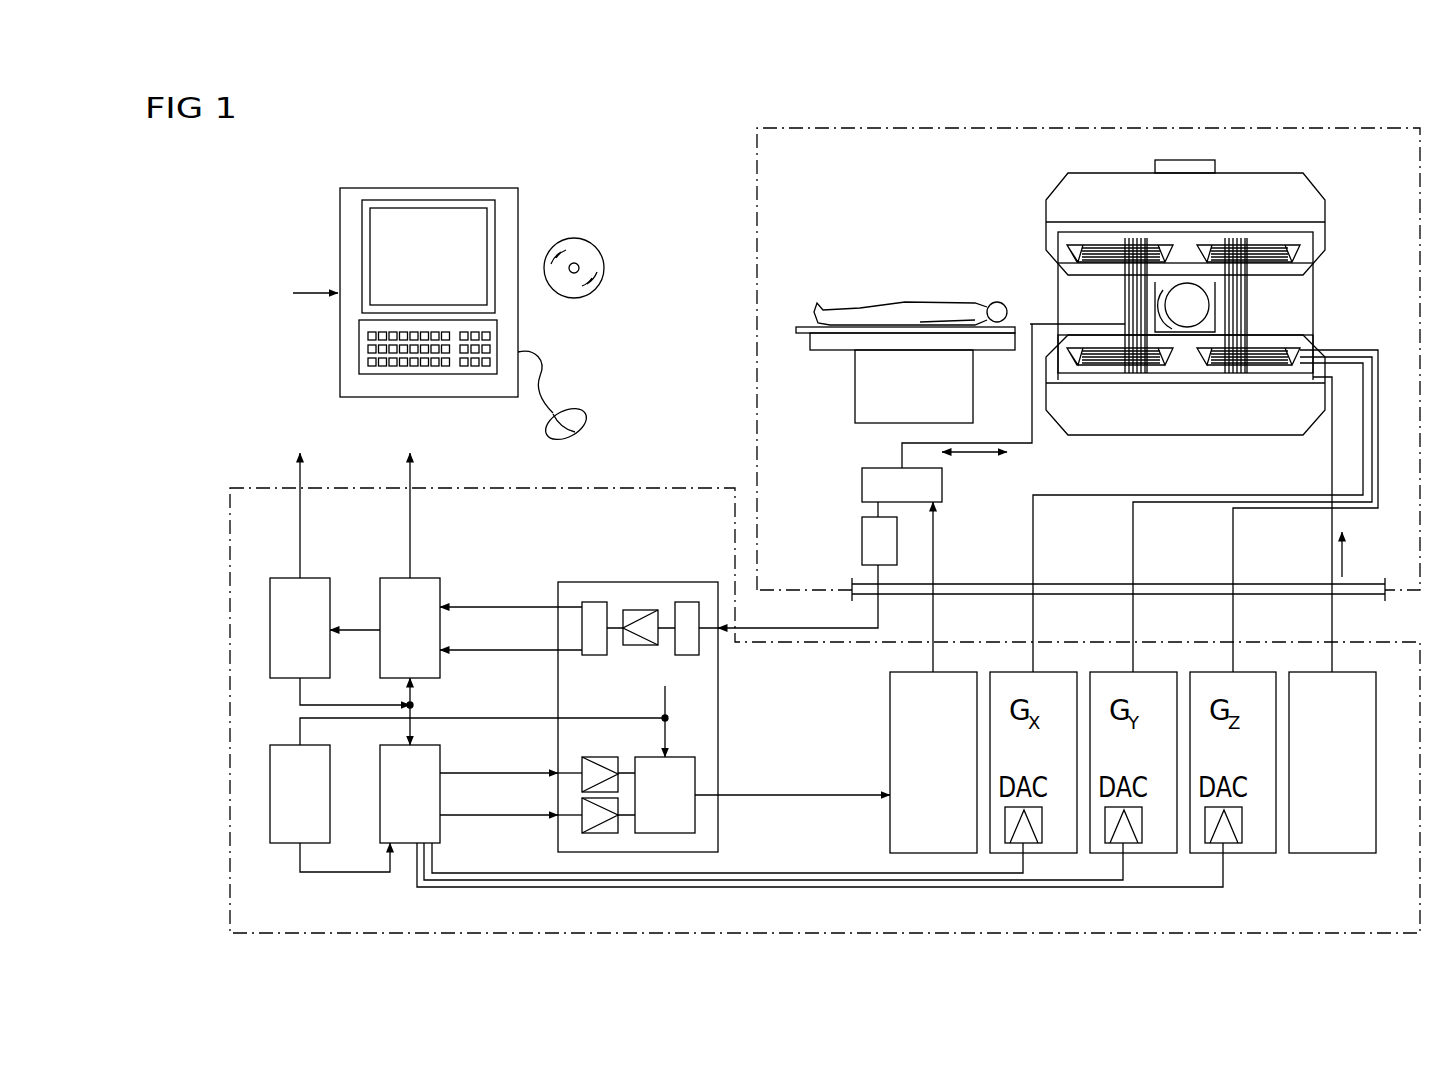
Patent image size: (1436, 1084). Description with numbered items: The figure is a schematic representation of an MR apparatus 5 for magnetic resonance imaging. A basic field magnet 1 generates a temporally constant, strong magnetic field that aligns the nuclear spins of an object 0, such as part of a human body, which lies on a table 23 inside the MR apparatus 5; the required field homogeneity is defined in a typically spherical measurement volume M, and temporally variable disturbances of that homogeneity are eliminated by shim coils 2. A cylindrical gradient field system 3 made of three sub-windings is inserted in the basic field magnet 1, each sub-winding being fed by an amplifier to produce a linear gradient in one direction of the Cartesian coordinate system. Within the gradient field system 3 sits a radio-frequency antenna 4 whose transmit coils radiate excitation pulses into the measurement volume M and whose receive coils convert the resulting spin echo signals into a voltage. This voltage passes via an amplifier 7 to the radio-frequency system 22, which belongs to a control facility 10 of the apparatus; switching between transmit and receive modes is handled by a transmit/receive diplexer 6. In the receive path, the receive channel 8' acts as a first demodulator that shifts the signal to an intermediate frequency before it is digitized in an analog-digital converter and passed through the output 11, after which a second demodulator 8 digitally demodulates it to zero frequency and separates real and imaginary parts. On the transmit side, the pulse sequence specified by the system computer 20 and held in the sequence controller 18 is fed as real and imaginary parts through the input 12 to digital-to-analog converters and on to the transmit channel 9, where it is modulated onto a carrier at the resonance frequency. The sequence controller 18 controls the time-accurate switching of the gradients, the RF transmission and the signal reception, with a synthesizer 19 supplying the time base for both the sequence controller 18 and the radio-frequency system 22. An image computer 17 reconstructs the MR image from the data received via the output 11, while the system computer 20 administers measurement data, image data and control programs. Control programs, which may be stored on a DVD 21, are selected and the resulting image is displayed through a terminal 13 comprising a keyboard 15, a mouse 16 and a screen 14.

The basic field magnet 1 is at (1305, 196).
The shim coils 2 is at (1310, 232).
The gradient field system 3 is at (1300, 254).
The radio-frequency antenna 4 is at (1218, 293).
The measurement volume M is at (1186, 304).
The object 0 is at (930, 313).
The table 23 is at (855, 383).
The MR apparatus 5 is at (695, 140).
The transmit/receive diplexer 6 is at (862, 481).
The amplifier 7 is at (862, 536).
The second demodulator 8 is at (594, 588).
The receive channel (first demodulator) 8' is at (687, 588).
The transmit channel 9 is at (680, 756).
The control facility 10 is at (648, 487).
The output 11 is at (558, 606).
The input 12 is at (557, 773).
The terminal 13 is at (476, 188).
The screen 14 is at (425, 216).
The keyboard 15 is at (455, 375).
The mouse 16 is at (580, 411).
The image computer 17 is at (426, 578).
The sequence controller 18 is at (407, 847).
The synthesizer 19 is at (287, 845).
The system computer 20 is at (318, 578).
The DVD 21 is at (572, 238).
The radio-frequency system 22 is at (640, 582).